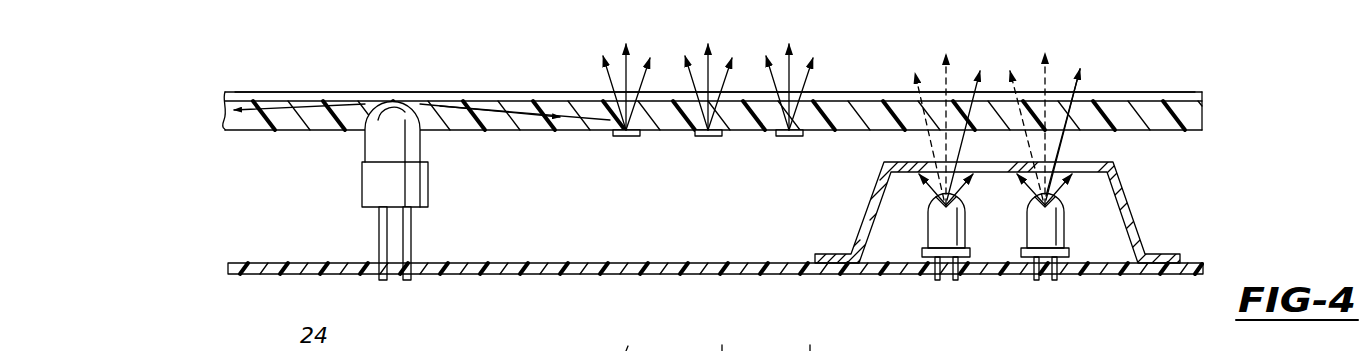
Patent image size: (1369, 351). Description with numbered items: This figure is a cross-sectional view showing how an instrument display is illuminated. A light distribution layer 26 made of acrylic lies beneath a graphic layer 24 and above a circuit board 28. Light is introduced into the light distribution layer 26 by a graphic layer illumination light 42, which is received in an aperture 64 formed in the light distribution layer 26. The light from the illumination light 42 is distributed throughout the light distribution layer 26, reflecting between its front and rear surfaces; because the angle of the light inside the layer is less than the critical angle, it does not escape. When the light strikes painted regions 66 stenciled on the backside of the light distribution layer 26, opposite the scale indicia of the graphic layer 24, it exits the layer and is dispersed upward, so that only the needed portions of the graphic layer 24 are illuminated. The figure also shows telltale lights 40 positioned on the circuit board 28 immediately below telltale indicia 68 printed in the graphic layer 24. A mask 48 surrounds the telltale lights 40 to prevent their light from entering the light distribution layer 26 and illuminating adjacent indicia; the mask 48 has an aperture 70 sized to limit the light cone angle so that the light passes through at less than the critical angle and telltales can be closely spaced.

The graphic layer 24 is at (233, 92).
The light distribution layer 26 is at (226, 116).
The circuit board 28 is at (247, 274).
The telltale light 40 is at (1063, 238).
The graphic layer illumination light 42 is at (362, 180).
The mask 48 is at (1128, 202).
The aperture 64 is at (340, 158).
The painted regions 66 is at (789, 136).
The telltale indicia 68 is at (1085, 85).
The aperture 70 is at (1057, 148).